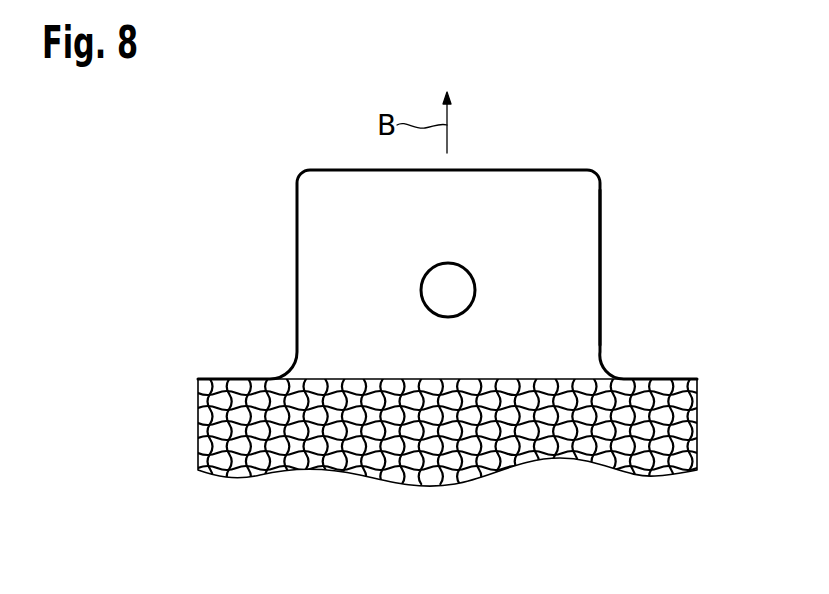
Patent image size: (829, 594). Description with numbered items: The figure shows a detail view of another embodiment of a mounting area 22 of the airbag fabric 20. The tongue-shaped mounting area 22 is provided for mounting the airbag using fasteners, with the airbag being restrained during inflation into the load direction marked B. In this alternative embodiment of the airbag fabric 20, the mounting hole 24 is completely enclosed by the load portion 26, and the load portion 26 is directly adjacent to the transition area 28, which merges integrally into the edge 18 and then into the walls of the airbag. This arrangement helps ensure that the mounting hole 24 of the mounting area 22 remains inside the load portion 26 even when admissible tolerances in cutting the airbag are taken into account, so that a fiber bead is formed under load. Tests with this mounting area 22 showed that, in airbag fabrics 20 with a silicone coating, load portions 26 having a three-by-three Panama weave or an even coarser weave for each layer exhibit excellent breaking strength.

The edge 18 is at (659, 402).
The airbag fabric 20 is at (186, 427).
The mounting area 22 is at (266, 189).
The mounting hole 24 is at (447, 290).
The load portion 26 is at (560, 245).
The transition area 28 is at (432, 397).